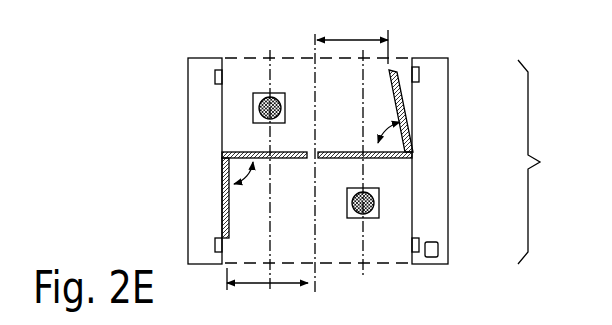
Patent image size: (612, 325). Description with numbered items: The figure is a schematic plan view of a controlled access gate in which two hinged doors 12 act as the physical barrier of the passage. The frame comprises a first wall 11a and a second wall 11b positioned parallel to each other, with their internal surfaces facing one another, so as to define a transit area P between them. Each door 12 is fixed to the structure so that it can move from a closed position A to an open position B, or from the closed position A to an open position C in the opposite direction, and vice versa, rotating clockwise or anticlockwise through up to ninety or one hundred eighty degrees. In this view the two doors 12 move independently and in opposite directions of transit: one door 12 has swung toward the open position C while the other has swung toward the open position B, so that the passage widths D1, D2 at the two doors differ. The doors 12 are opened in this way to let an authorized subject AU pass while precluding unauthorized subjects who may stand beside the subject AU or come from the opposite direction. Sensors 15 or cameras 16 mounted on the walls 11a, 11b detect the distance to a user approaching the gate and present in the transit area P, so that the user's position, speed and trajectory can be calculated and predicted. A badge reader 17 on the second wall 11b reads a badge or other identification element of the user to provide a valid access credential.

The first wall 11a is at (192, 107).
The second wall 11b is at (435, 97).
The door 12 is at (222, 150).
The sensor 15 is at (306, 133).
The camera 16 is at (218, 78).
The badge reader 17 is at (438, 250).
The authorized subject AU is at (260, 107).
The closed position A is at (301, 161).
The open position B is at (388, 125).
The open position C is at (243, 198).
The passage width D1 is at (267, 287).
The passage width D2 is at (352, 41).
The transit area P is at (565, 172).